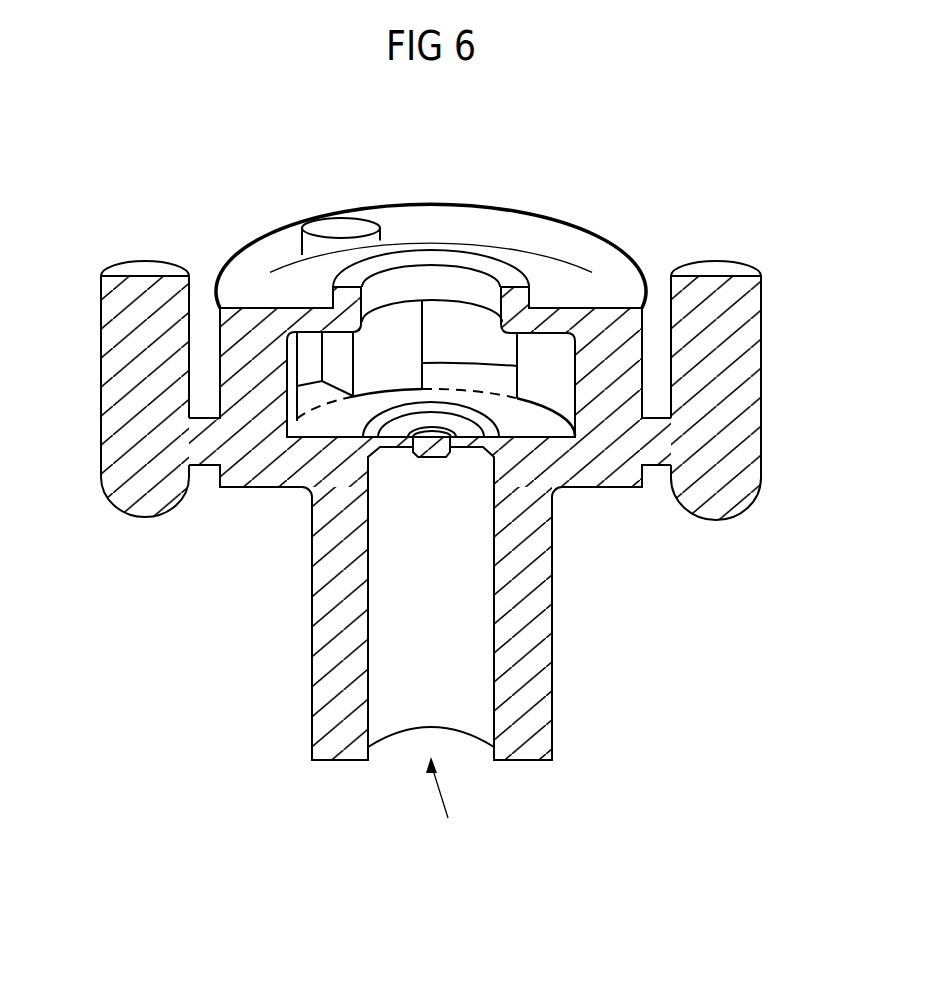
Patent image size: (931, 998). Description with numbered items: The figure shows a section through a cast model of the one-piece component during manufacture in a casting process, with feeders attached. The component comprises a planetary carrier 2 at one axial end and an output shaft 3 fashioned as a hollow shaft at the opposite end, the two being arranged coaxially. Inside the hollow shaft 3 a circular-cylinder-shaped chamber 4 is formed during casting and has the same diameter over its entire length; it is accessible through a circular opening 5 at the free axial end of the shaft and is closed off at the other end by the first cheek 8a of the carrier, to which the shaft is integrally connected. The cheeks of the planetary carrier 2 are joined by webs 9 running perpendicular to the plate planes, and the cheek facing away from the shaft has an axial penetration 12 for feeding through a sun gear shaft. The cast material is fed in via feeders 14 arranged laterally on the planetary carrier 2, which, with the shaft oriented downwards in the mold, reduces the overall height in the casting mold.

The planetary carrier 2 is at (612, 489).
The output shaft 3 is at (540, 685).
The chamber 4 is at (421, 665).
The circular opening 5 is at (444, 802).
The first cheek 8a is at (270, 489).
The webs 9 is at (227, 329).
The axial penetration 12 is at (445, 283).
The feeders 14 is at (341, 232).